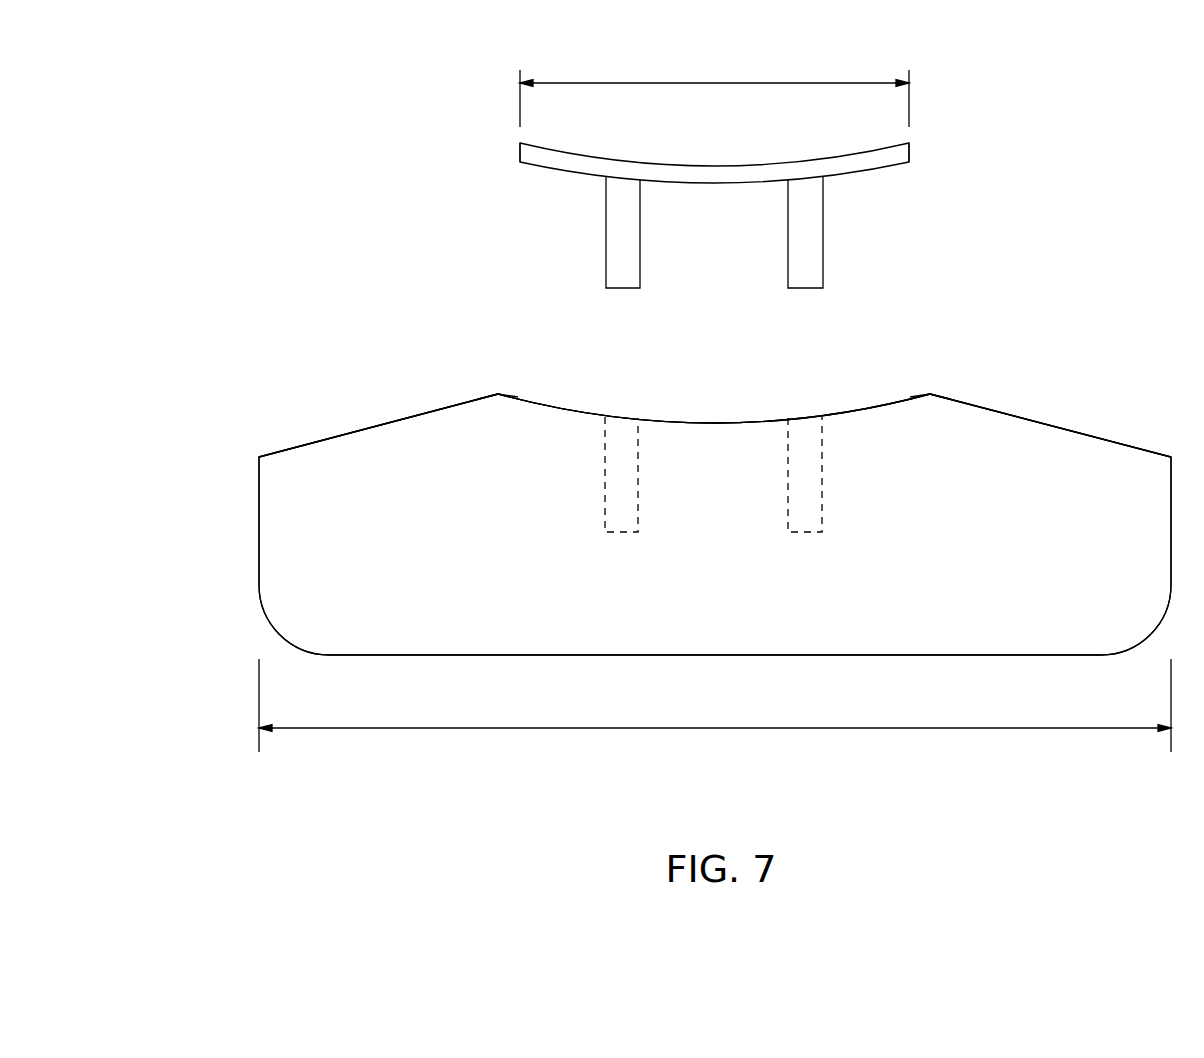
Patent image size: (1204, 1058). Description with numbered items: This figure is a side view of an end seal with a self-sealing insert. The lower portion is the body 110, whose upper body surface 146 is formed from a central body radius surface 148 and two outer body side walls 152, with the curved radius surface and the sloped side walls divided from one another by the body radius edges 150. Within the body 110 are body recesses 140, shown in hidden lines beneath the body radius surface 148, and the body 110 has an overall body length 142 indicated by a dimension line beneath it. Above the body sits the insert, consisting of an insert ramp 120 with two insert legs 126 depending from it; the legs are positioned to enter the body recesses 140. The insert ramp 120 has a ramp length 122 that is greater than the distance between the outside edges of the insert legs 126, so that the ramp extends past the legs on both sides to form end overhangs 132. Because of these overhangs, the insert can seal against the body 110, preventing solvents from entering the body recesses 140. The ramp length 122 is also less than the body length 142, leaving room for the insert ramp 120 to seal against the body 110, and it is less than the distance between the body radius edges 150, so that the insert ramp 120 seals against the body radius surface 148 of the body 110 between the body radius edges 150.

The body 110 is at (1049, 438).
The insert ramp 120 is at (713, 173).
The ramp length 122 is at (713, 83).
The insert legs 126 is at (603, 258).
The end overhangs 132 is at (545, 168).
The body recesses 140 is at (619, 532).
The body length 142 is at (716, 728).
The upper body surface 146 is at (278, 418).
The body radius surface 148 is at (710, 422).
The body radius edges 150 is at (498, 394).
The body side walls 152 is at (417, 415).